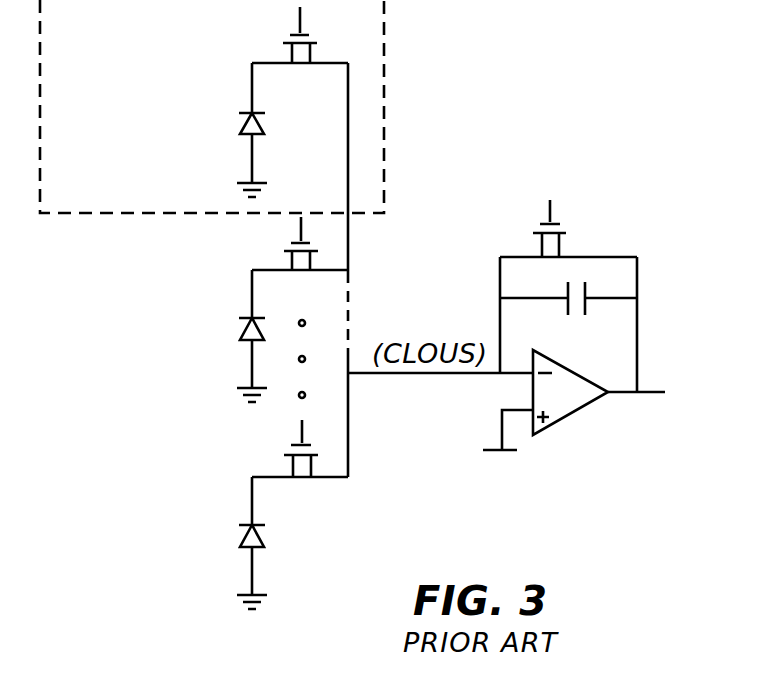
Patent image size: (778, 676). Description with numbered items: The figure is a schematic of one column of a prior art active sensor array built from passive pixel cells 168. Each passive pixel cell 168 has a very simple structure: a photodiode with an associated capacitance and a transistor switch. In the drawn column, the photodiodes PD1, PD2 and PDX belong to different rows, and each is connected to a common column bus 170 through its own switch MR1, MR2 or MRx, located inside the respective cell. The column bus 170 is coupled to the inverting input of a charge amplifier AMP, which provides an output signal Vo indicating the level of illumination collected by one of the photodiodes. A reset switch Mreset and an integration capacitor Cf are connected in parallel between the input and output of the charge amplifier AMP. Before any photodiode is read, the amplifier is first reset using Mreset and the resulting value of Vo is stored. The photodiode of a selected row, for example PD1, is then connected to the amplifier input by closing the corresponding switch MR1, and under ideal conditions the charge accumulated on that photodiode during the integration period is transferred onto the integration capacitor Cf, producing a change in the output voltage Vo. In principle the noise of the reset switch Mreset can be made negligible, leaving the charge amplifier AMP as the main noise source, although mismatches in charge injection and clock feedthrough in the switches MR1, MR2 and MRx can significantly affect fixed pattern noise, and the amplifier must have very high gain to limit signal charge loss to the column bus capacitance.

The passive pixel cell 168 is at (384, 88).
The common column bus 170 is at (348, 250).
The transistor switch MR1 is at (300, 55).
The transistor switch MR2 is at (300, 261).
The transistor switch MRx is at (300, 466).
The photodiode PD1 is at (163, 130).
The photodiode PD2 is at (163, 336).
The photodiode PDX is at (163, 543).
The reset switch Mreset is at (579, 228).
The integration capacitor Cf is at (568, 305).
The charge amplifier AMP is at (545, 400).
The output voltage Vo is at (658, 393).